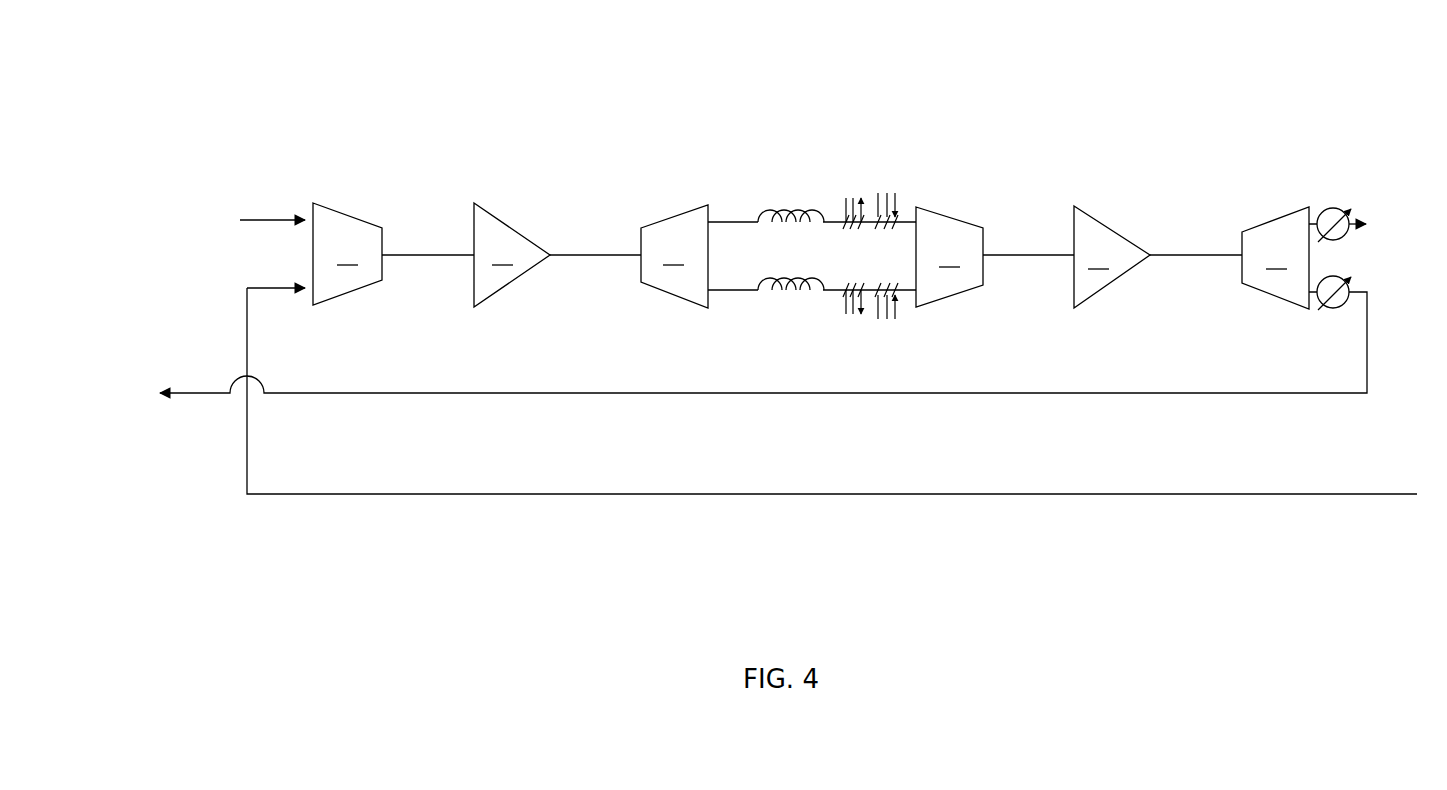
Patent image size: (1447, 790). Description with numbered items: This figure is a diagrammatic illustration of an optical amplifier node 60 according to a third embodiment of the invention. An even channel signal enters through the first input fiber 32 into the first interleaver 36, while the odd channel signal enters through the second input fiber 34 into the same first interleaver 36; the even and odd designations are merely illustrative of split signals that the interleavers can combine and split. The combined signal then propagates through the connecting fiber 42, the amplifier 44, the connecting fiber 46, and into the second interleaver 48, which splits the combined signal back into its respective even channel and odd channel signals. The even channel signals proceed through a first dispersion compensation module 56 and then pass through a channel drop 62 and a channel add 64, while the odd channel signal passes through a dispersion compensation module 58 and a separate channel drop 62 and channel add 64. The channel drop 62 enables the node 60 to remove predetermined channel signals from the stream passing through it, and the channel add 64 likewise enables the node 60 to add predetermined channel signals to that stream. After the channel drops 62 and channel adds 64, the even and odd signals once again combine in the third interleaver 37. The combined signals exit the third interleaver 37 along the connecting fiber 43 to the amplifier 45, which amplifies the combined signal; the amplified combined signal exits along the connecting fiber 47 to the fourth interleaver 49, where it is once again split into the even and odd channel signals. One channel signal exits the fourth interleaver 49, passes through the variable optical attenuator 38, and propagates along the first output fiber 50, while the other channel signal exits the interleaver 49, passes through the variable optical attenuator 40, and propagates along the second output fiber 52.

The first input fiber 32 is at (280, 220).
The second input fiber 34 is at (262, 287).
The first interleaver 36 is at (347, 254).
The third interleaver 37 is at (949, 257).
The variable optical attenuator 38 is at (1337, 207).
The variable optical attenuator 40 is at (1333, 310).
The connecting fiber 42 is at (448, 255).
The connecting fiber 43 is at (998, 255).
The amplifier 44 is at (512, 255).
The amplifier 45 is at (1112, 257).
The connecting fiber 46 is at (617, 255).
The connecting fiber 47 is at (1171, 255).
The second interleaver 48 is at (778, 256).
The fourth interleaver 49 is at (1279, 258).
The first output fiber 50 is at (1361, 218).
The second output fiber 52 is at (1367, 335).
The first dispersion compensation module 56 is at (800, 197).
The dispersion compensation module 58 is at (805, 292).
The optical amplifier node 60 is at (452, 147).
The channel drop 62 is at (846, 195).
The channel add 64 is at (888, 195).